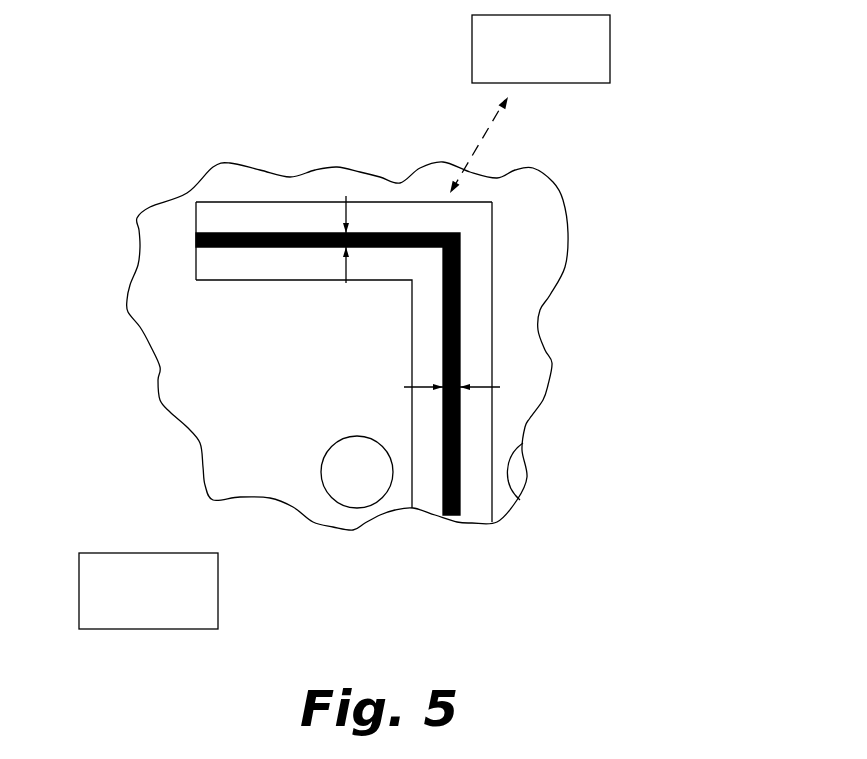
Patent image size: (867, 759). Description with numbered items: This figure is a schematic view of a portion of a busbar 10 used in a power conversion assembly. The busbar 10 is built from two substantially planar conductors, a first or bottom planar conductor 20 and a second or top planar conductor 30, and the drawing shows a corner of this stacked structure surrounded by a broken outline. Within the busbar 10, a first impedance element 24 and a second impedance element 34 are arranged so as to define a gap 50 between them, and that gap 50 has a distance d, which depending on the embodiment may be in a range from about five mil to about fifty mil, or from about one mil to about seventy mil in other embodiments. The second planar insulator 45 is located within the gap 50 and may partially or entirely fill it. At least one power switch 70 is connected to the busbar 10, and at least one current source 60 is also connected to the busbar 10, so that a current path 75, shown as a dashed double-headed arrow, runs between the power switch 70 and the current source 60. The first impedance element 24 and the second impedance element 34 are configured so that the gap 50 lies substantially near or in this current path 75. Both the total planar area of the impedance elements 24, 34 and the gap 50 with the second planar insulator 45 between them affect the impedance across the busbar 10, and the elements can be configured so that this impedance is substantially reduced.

The busbar 10 is at (583, 485).
The first planar conductor 20 is at (300, 409).
The first impedance element 24 is at (220, 288).
The second planar conductor 30 is at (542, 240).
The second impedance element 34 is at (253, 196).
The second planar insulator 45 is at (228, 234).
The gap 50 is at (177, 243).
The distance d is at (352, 238).
The current source 60 is at (618, 42).
The power switch 70 is at (97, 637).
The current path 75 is at (480, 143).